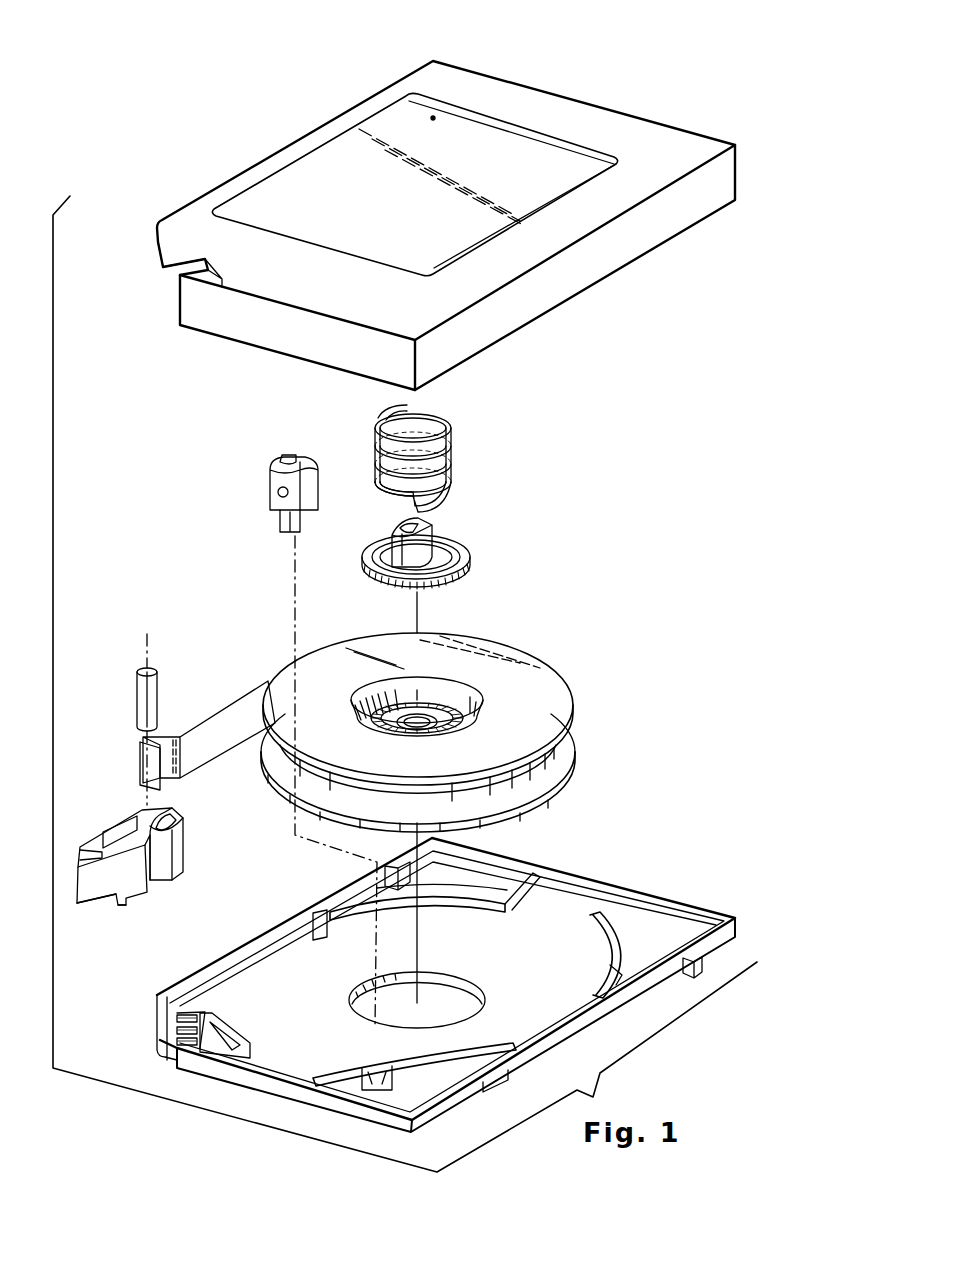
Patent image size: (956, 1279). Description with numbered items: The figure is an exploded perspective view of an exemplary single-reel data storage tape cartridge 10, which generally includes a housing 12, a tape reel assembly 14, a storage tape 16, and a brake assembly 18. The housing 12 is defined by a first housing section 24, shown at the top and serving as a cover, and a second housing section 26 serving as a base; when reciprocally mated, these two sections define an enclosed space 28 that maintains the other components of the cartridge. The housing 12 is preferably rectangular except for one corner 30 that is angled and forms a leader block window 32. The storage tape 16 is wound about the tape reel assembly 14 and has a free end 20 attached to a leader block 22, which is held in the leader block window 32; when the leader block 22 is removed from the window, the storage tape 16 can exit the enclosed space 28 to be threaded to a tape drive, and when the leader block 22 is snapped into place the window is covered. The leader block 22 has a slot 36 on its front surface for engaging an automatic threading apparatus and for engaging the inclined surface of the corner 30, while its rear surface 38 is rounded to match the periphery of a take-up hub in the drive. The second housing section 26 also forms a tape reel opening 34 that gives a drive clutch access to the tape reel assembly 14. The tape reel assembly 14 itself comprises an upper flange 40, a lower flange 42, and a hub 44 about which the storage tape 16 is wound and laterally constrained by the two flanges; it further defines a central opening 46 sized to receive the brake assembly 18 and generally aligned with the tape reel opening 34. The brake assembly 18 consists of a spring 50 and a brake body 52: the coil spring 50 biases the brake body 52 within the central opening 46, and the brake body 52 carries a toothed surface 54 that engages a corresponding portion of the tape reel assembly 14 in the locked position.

The data storage tape cartridge 10 is at (672, 48).
The housing 12 is at (697, 123).
The tape reel assembly 14 is at (520, 639).
The storage tape 16 is at (237, 717).
The brake assembly 18 is at (519, 476).
The free end 20 is at (150, 763).
The leader block 22 is at (183, 835).
The first housing section 24 is at (475, 82).
The second housing section 26 is at (655, 891).
The enclosed space 28 is at (537, 937).
The corner 30 is at (159, 247).
The leader block window 32 is at (165, 1030).
The tape reel opening 34 is at (457, 977).
The slot 36 is at (113, 897).
The rear surface 38 is at (175, 820).
The upper flange 40 is at (547, 678).
The lower flange 42 is at (563, 757).
The hub 44 is at (451, 681).
The central opening 46 is at (375, 690).
The spring 50 is at (456, 422).
The brake body 52 is at (440, 552).
The toothed surface 54 is at (397, 590).